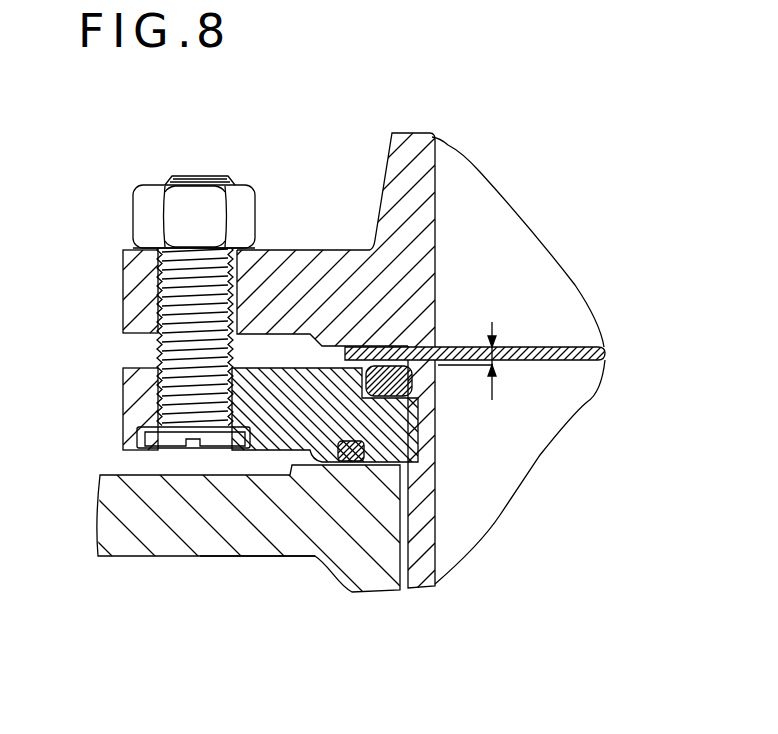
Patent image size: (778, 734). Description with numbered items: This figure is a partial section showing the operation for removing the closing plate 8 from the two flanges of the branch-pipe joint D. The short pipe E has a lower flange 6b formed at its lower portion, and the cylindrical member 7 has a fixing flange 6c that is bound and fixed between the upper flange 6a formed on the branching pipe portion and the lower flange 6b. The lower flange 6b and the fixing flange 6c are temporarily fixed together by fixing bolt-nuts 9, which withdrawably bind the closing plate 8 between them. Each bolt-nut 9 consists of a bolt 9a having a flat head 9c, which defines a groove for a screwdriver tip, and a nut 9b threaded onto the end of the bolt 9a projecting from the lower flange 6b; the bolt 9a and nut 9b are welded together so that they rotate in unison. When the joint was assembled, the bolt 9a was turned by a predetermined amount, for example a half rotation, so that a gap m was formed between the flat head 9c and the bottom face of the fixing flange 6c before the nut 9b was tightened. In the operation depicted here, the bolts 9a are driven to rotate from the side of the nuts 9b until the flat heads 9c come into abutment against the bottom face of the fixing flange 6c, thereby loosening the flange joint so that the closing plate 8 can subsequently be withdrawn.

The fixing bolt-nut 9 is at (184, 301).
The bolt 9a is at (160, 345).
The nut 9b is at (245, 200).
The flat head 9c is at (160, 453).
The upper flange 6a is at (178, 558).
The lower flange 6b is at (123, 275).
The fixing flange 6c is at (123, 400).
The cylindrical member 7 is at (477, 510).
The closing plate 8 is at (561, 362).
The short pipe E is at (386, 165).
The gap m is at (509, 362).
The branch-pipe joint D is at (268, 558).